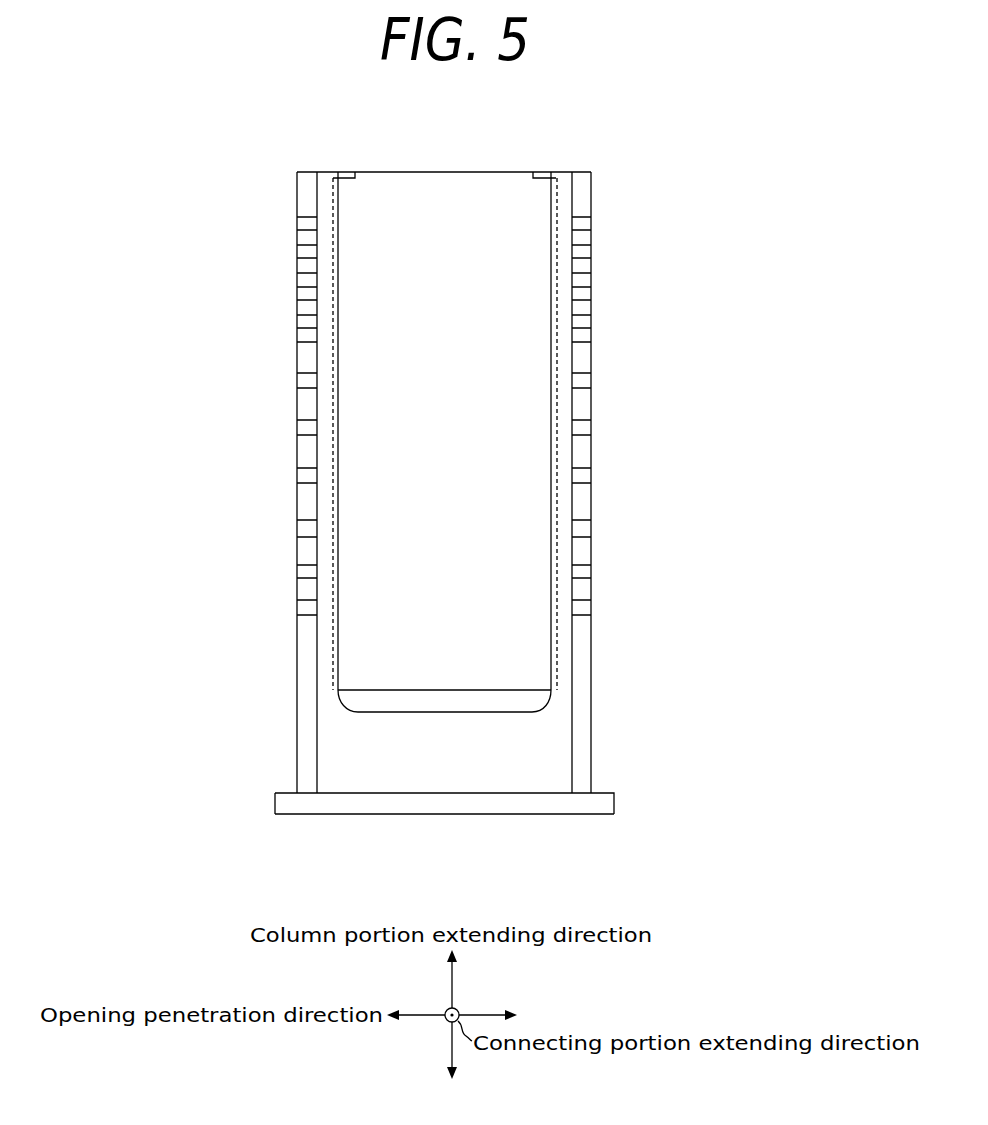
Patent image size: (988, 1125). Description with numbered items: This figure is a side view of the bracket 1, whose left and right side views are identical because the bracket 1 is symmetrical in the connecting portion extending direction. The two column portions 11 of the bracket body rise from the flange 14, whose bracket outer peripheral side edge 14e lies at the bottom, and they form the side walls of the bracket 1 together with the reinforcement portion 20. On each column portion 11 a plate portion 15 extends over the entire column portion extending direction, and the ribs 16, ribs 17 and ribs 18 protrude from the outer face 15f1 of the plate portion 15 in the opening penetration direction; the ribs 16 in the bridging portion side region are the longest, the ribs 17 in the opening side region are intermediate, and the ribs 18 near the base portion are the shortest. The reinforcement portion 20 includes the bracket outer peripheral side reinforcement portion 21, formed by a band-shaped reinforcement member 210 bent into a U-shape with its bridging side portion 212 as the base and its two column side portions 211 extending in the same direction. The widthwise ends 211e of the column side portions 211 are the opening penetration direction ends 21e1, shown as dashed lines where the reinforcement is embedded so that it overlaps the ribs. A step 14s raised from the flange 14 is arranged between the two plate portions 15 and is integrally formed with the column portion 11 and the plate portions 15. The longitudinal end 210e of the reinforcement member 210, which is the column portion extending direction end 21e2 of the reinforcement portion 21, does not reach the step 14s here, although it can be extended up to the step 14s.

The bracket 1 is at (712, 192).
The column portion 11 is at (305, 693).
The flange 14 is at (632, 805).
The bracket outer peripheral side edge 14e is at (475, 803).
The step 14s is at (444, 672).
The plate portion 15 is at (308, 355).
The outer face 15f1 is at (317, 657).
The ribs 16 is at (301, 218).
The ribs 17 is at (301, 380).
The ribs 18 is at (302, 565).
The reinforcement portion 20 is at (444, 145).
The bracket outer peripheral side reinforcement portion 21 is at (472, 166).
The reinforcement member 210 is at (444, 451).
The column side portion 211 is at (444, 709).
The bridging side portion 212 is at (413, 172).
The opening penetration direction end 21e1 is at (444, 413).
The widthwise end 211e is at (333, 190).
The column portion extending direction end 21e2 is at (450, 737).
The longitudinal end 210e is at (482, 692).